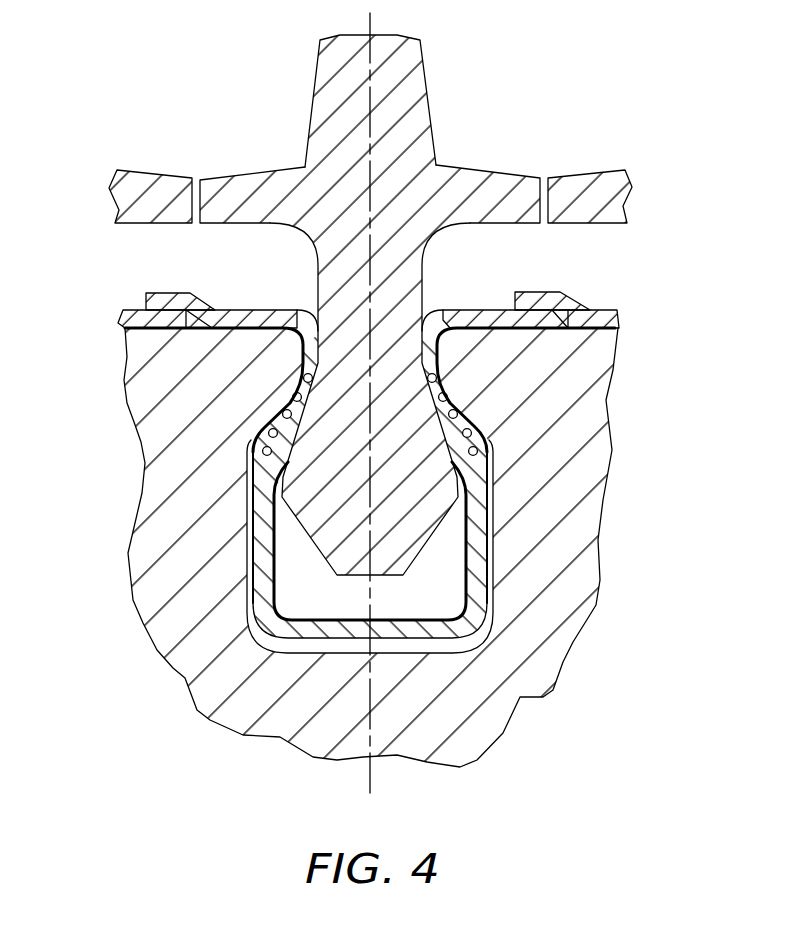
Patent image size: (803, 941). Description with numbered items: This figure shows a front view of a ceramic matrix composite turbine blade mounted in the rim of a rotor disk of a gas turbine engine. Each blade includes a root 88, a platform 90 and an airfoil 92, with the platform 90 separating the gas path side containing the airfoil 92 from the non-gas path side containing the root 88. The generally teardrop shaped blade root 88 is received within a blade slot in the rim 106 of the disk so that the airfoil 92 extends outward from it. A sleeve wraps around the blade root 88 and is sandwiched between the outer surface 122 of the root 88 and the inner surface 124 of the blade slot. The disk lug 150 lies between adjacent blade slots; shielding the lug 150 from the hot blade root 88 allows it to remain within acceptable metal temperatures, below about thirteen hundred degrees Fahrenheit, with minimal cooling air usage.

The root 88 is at (410, 502).
The platform 90 is at (498, 190).
The airfoil 92 is at (400, 63).
The rim 106 is at (568, 307).
The outer surface 122 is at (483, 438).
The inner surface 124 is at (490, 405).
The disk lug 150 is at (165, 372).